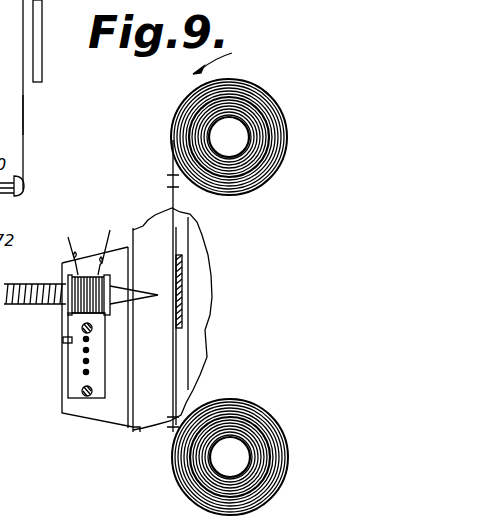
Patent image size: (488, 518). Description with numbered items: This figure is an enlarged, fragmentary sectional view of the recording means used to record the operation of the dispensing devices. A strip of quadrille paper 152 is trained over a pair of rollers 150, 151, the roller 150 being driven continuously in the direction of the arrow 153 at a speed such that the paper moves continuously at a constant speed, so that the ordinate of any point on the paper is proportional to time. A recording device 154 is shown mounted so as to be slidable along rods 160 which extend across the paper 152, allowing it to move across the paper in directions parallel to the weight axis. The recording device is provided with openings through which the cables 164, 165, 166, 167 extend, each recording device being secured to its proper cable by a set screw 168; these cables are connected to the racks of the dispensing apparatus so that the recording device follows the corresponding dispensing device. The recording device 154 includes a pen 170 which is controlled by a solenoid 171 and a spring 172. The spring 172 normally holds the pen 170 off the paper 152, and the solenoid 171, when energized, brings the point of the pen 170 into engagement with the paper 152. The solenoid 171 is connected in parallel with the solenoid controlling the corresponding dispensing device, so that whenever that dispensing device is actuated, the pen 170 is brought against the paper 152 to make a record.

The roller 150 is at (250, 108).
The roller 151 is at (256, 415).
The strip of quadrille paper 152 is at (178, 195).
The arrow 153 is at (227, 58).
The recording device 154 is at (57, 317).
The rods 160 is at (93, 328).
The cable 164 is at (24, 115).
The cable 165 is at (84, 352).
The cable 166 is at (84, 363).
The cable 167 is at (90, 376).
The set screw 168 is at (63, 340).
The pen 170 is at (153, 297).
The solenoid 171 is at (96, 264).
The spring 172 is at (50, 285).